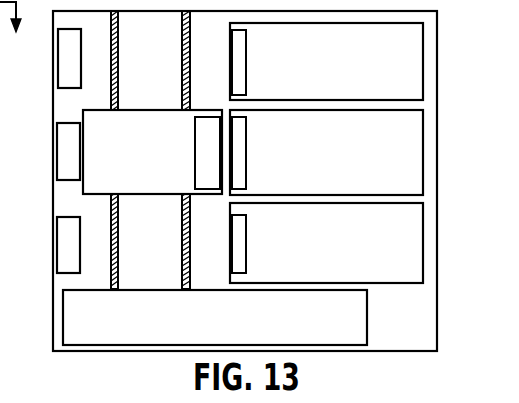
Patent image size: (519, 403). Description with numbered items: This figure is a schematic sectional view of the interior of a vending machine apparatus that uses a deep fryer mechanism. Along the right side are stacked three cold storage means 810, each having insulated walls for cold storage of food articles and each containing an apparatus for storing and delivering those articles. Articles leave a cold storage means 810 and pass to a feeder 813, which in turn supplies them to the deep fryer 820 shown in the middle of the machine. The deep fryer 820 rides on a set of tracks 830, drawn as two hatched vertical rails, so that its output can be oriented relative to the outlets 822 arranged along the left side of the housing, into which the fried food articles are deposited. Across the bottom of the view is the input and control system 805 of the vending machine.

The input and control system 805 is at (213, 334).
The cold storage means 810 is at (343, 82).
The feeder 813 is at (227, 116).
The deep fryer 820 is at (153, 166).
The outlets 822 is at (58, 58).
The tracks 830 is at (118, 68).